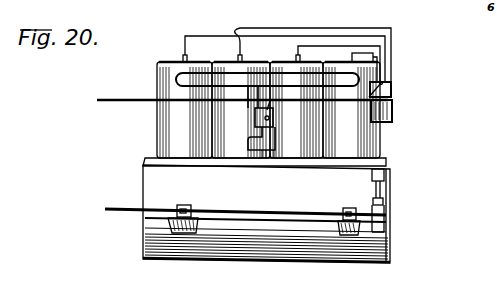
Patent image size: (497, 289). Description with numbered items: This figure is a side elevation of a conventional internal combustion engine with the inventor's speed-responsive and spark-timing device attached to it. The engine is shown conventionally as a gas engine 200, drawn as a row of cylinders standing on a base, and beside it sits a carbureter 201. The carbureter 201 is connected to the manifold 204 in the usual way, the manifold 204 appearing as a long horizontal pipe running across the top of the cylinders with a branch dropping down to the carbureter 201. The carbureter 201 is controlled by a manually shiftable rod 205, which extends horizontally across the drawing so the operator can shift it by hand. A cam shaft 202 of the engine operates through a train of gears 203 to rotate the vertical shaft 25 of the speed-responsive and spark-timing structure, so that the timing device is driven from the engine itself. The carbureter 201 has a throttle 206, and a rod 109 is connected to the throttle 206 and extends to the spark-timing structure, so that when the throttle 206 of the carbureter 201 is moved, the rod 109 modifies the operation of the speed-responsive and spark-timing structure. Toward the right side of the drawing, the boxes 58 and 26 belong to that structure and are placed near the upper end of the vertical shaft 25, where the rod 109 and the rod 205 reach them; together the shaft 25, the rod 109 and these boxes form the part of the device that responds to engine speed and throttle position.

The gas engine 200 is at (185, 135).
The manifold 204 is at (180, 73).
The manually shiftable rod 205 is at (133, 101).
The throttle 206 is at (275, 118).
The carbureter 201 is at (253, 160).
The cam shaft 202 is at (257, 215).
The train of gears 203 is at (387, 216).
The switch box 58 is at (392, 87).
The terminal box 26 is at (394, 112).
The rod 109 is at (338, 110).
The vertical shaft 25 is at (384, 156).